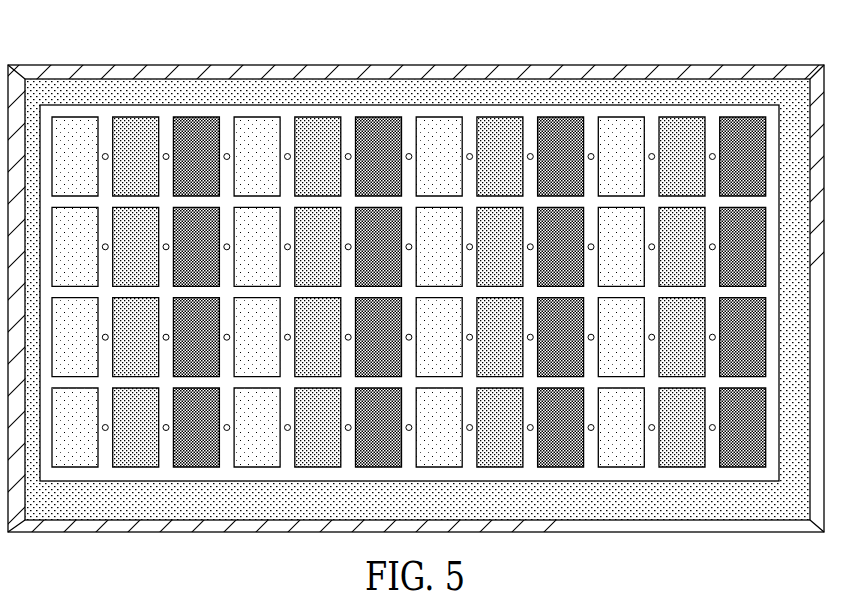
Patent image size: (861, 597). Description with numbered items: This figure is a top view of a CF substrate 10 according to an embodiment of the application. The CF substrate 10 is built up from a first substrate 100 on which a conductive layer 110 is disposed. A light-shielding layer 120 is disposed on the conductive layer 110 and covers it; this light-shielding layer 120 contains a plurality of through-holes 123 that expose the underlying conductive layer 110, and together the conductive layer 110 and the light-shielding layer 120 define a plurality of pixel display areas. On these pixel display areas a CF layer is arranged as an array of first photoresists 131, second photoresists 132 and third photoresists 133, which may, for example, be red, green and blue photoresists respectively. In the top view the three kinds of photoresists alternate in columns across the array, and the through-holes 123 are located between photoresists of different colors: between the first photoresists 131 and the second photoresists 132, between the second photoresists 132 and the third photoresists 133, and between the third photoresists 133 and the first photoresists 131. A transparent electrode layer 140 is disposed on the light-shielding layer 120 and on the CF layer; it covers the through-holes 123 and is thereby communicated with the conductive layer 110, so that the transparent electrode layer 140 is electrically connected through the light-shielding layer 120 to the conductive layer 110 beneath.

The CF substrate 10 is at (695, 58).
The first substrate 100 is at (385, 78).
The conductive layer 110 is at (287, 157).
The light-shielding layer 120 is at (592, 117).
The through-holes 123 is at (348, 122).
The first photoresists 131 is at (72, 140).
The second photoresists 132 is at (135, 140).
The third photoresists 133 is at (193, 142).
The transparent electrode layer 140 is at (493, 92).